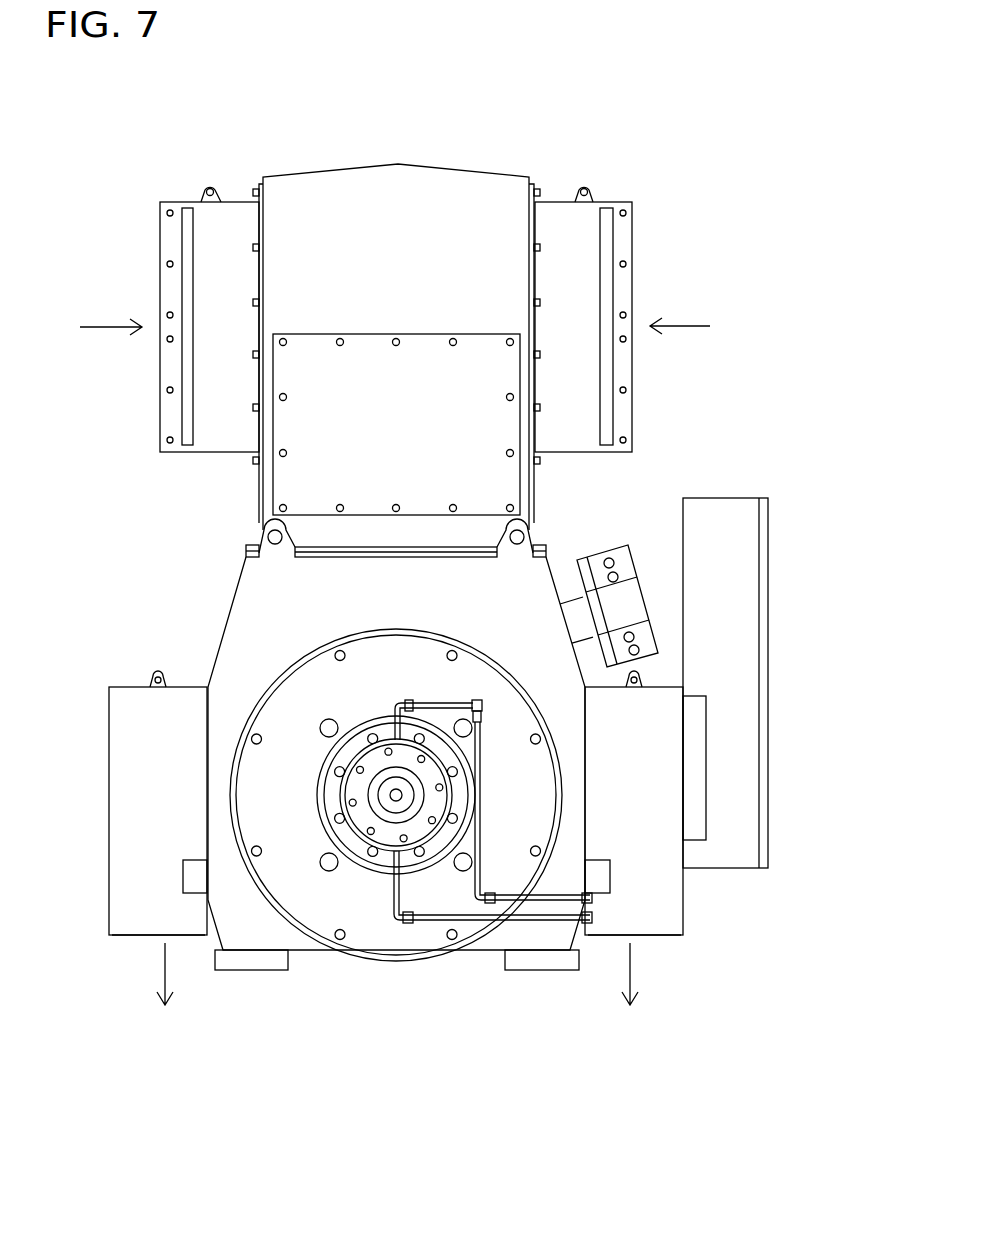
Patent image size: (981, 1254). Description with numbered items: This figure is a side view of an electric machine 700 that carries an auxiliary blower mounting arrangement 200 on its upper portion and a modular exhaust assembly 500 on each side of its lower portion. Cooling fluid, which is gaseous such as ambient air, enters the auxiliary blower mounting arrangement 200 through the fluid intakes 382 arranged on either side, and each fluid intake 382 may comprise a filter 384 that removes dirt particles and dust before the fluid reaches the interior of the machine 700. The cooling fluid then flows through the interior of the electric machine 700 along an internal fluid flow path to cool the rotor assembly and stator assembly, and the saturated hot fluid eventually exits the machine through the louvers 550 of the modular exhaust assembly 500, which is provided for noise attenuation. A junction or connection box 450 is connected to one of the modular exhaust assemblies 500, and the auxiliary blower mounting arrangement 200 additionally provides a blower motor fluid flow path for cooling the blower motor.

The electric machine 700 is at (721, 84).
The auxiliary blower mounting arrangement 200 is at (537, 138).
The fluid intake 382 is at (160, 418).
The filter 384 is at (182, 243).
The junction or connection box 450 is at (737, 580).
The modular exhaust assembly 500 is at (133, 743).
The louvers 550 is at (127, 937).